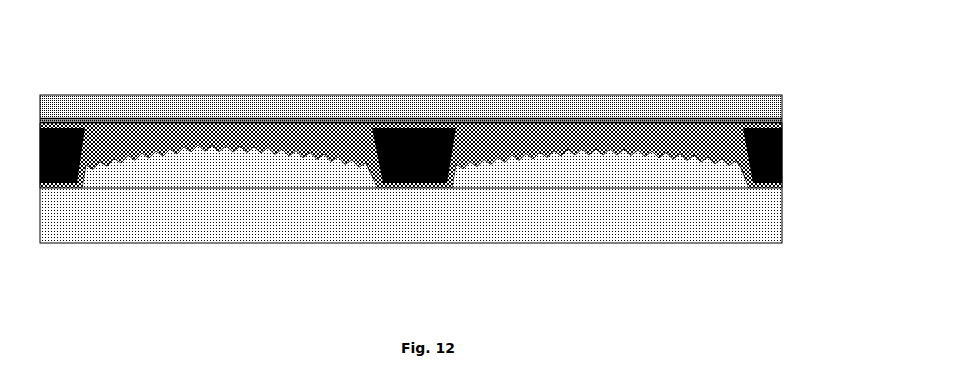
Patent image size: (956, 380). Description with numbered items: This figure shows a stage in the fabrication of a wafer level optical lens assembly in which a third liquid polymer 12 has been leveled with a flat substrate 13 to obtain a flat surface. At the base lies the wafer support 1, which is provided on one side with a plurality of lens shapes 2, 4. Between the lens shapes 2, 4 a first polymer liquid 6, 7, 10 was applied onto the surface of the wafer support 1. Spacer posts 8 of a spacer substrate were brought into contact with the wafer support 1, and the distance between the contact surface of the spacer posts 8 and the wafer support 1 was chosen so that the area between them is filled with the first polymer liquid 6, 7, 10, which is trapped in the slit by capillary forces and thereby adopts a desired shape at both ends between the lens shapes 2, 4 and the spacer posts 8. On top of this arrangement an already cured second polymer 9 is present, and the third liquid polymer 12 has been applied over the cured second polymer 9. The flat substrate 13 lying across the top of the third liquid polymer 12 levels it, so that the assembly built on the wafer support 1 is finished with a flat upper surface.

The wafer support 1 is at (250, 225).
The lens shape 2 is at (150, 182).
The lens shape 4 is at (624, 166).
The first polymer liquid 6 is at (374, 180).
The first polymer liquid 7 is at (61, 188).
The spacer post 8 is at (414, 128).
The second polymer 9 is at (142, 125).
The first polymer liquid 10 is at (748, 188).
The third liquid polymer 12 is at (783, 121).
The flat substrate 13 is at (477, 107).